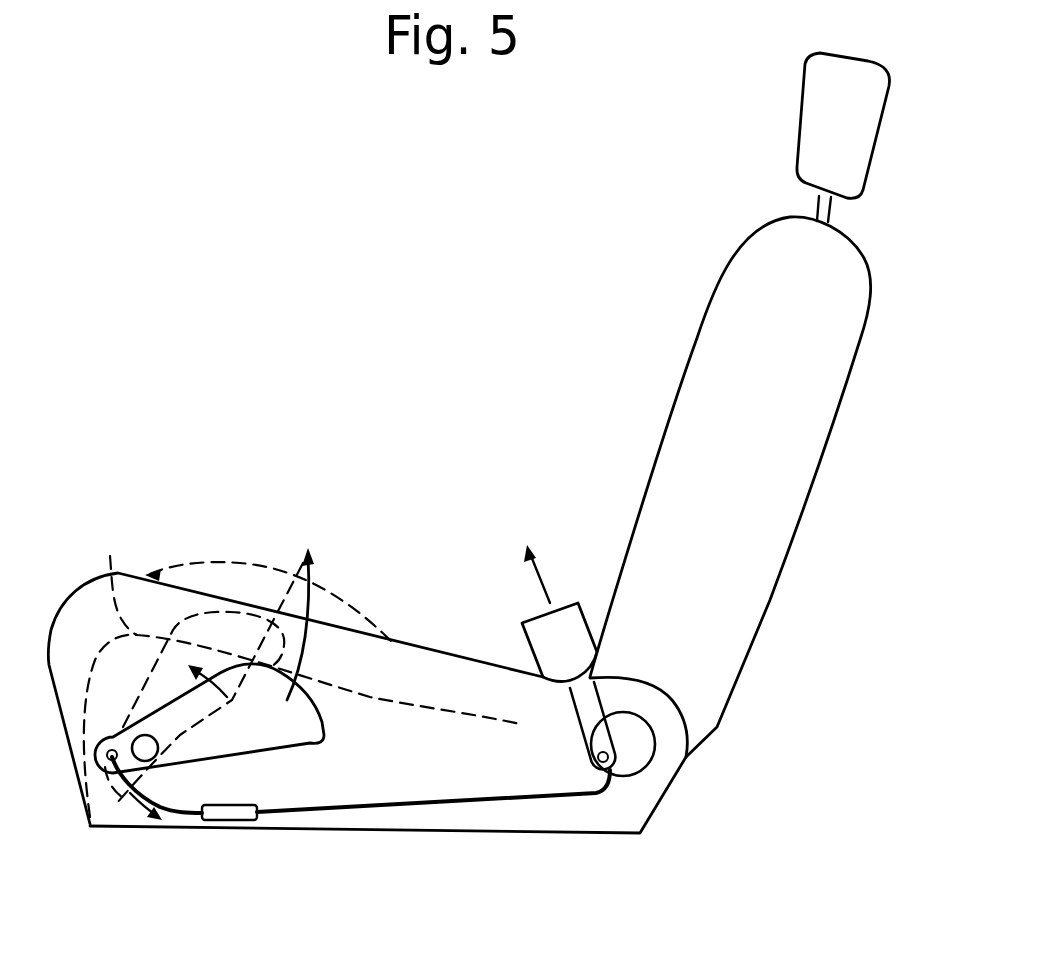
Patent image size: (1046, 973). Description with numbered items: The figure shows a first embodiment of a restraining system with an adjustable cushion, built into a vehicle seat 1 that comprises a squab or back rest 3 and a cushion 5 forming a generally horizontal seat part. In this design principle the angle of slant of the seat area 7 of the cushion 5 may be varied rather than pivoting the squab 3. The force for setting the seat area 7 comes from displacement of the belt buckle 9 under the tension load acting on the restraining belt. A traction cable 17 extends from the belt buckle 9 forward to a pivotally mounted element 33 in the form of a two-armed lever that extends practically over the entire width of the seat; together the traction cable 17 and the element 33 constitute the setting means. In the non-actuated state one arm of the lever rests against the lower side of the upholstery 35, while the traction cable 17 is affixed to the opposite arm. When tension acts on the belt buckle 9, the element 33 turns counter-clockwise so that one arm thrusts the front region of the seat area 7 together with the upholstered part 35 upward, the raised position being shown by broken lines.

The vehicle seat 1 is at (481, 324).
The squab 3 is at (783, 491).
The cushion 5 is at (465, 763).
The seat area 7 is at (455, 657).
The belt buckle 9 is at (566, 635).
The traction cable 17 is at (353, 807).
The pivotally mounted element 33 is at (310, 556).
The upholstery 35 is at (109, 553).